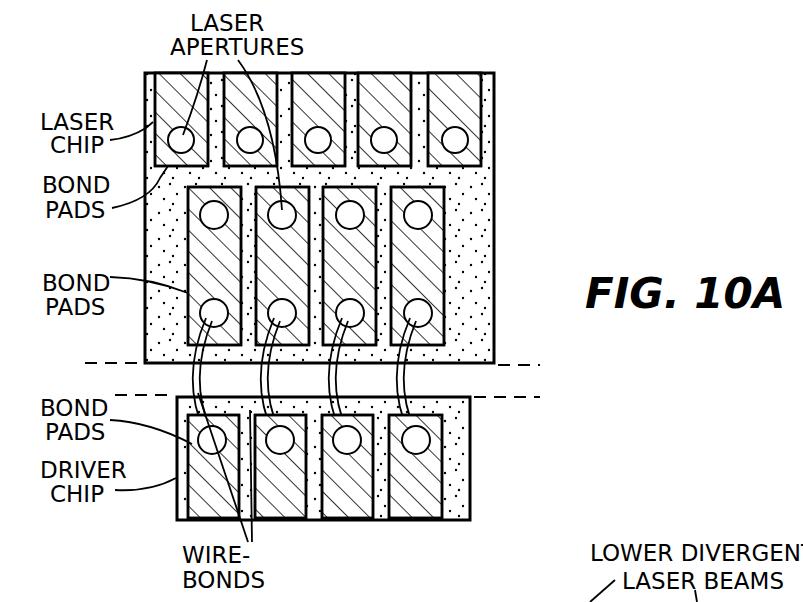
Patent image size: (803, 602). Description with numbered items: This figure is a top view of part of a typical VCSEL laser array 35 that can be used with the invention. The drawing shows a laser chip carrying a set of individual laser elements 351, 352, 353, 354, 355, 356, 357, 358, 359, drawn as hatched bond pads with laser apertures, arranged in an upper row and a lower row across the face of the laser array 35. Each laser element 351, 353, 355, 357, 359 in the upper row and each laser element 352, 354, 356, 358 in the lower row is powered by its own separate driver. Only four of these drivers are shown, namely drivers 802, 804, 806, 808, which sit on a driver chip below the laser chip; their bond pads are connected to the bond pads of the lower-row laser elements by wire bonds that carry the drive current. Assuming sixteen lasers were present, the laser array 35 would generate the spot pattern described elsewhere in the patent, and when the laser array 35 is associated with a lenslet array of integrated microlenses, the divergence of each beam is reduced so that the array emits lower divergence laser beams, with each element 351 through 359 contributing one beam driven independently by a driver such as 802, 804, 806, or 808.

The laser array 35 is at (120, 248).
The laser element 351 is at (183, 95).
The laser element 352 is at (233, 272).
The laser element 353 is at (270, 95).
The laser element 354 is at (302, 272).
The laser element 355 is at (325, 93).
The laser element 356 is at (367, 278).
The laser element 357 is at (392, 93).
The laser element 358 is at (430, 252).
The laser element 359 is at (457, 98).
The driver 802 is at (183, 516).
The driver 804 is at (272, 522).
The driver 806 is at (347, 522).
The driver 808 is at (425, 522).